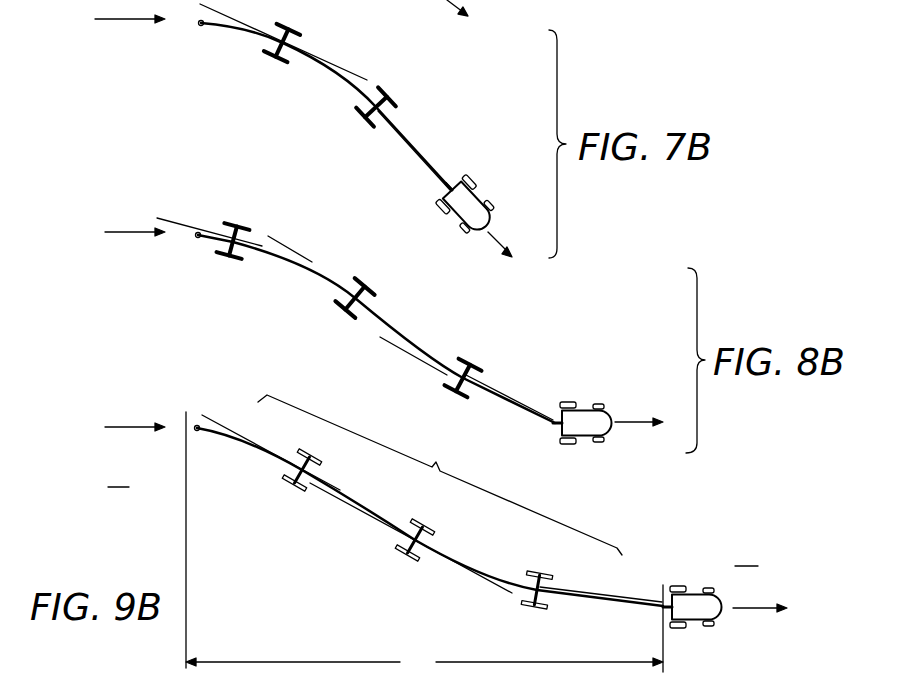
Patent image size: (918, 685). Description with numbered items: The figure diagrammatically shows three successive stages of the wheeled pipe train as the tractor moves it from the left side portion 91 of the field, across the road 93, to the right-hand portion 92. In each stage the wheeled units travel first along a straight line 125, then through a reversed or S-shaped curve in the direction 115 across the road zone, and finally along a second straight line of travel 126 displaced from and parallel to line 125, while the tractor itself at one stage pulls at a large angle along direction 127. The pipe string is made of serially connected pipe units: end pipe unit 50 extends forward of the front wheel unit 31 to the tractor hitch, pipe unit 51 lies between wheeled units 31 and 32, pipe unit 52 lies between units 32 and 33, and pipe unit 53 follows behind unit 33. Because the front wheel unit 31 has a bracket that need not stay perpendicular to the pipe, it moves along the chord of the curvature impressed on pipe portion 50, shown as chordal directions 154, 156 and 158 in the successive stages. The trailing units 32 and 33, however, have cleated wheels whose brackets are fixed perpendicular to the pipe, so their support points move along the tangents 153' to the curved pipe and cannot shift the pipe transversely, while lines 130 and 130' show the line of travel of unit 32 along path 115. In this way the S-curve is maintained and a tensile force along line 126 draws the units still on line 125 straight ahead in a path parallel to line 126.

In FIG. 7B, the first straight line of travel 125 is at (105, 20).
In FIG. 8B, the first straight line of travel 125 is at (112, 233).
In FIG. 9B, the first straight line of travel 125 is at (113, 426).
In FIG. 8B, the second straight line of travel 126 is at (633, 421).
In FIG. 9B, the second straight line of travel 126 is at (763, 613).
In FIG. 7B, the tractor direction of travel 127 is at (449, 1).
In FIG. 8B, the line of travel of unit 32 130 is at (209, 217).
In FIG. 9B, the line of travel of unit 32 130' is at (271, 452).
In FIG. 7B, the front wheel unit 31 is at (390, 96).
In FIG. 8B, the front wheel unit 31 is at (473, 362).
In FIG. 9B, the front wheel unit 31 is at (537, 608).
In FIG. 7B, the trailing wheeled unit 32 is at (285, 25).
In FIG. 8B, the trailing wheeled unit 32 is at (370, 285).
In FIG. 9B, the trailing wheeled unit 32 is at (413, 560).
In FIG. 8B, the trailing wheeled unit 33 is at (238, 222).
In FIG. 9B, the trailing wheeled unit 33 is at (300, 492).
In FIG. 7B, the end pipe unit 50 is at (412, 142).
In FIG. 8B, the end pipe unit 50 is at (520, 409).
In FIG. 9B, the end pipe unit 50 is at (617, 606).
In FIG. 7B, the pipe unit 51 is at (345, 85).
In FIG. 8B, the pipe unit 51 is at (448, 362).
In FIG. 9B, the pipe unit 51 is at (513, 580).
In FIG. 7B, the pipe unit 52 is at (242, 33).
In FIG. 8B, the pipe unit 52 is at (297, 270).
In FIG. 9B, the pipe unit 52 is at (358, 513).
In FIG. 9B, the pipe unit 53 is at (238, 438).
In FIG. 7B, the wheel path tangent 153' is at (292, 42).
In FIG. 7B, the chordal direction 154 is at (413, 150).
In FIG. 8B, the chordal direction 156 is at (520, 400).
In FIG. 9B, the chordal direction 158 is at (605, 598).
In FIG. 9B, the direction across the road zone 115 is at (440, 475).
In FIG. 9B, the left side portion of field 91 is at (120, 476).
In FIG. 9B, the right-hand portion of field 92 is at (747, 555).
In FIG. 9B, the road 93 is at (424, 661).